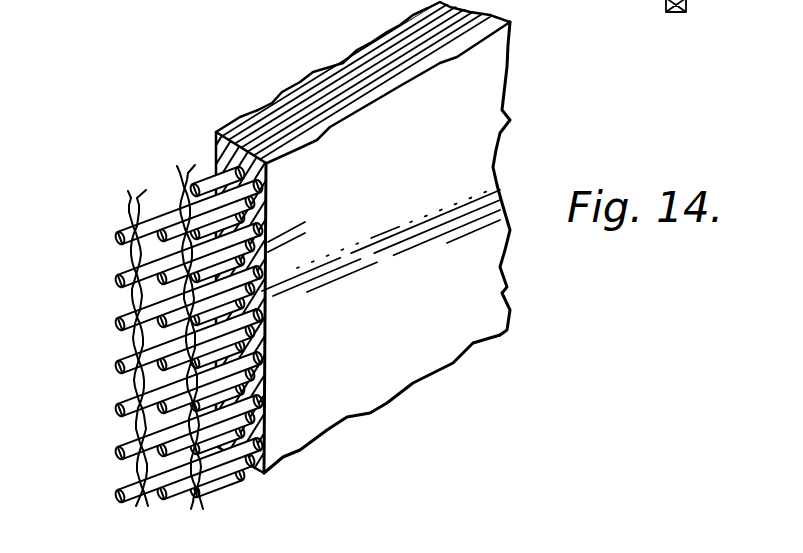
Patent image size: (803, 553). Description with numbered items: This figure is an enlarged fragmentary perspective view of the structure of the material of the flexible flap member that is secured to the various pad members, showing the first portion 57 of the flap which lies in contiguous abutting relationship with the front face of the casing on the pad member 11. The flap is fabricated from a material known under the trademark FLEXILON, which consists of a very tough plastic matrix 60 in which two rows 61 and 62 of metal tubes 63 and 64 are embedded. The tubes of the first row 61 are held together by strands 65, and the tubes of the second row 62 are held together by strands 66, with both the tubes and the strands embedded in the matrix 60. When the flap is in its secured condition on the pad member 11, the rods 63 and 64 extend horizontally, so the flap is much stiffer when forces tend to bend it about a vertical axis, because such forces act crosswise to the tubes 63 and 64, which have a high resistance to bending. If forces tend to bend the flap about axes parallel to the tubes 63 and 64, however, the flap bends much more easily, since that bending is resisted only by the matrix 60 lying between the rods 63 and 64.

The pad member 11 is at (667, 6).
The first portion 57 is at (493, 122).
The plastic matrix 60 is at (348, 66).
The row of metal tubes 61 is at (238, 143).
The row of metal tubes 62 is at (268, 165).
The metal tubes 63 is at (117, 240).
The metal tubes 64 is at (267, 226).
The strands 65 is at (137, 198).
The strands 66 is at (186, 172).